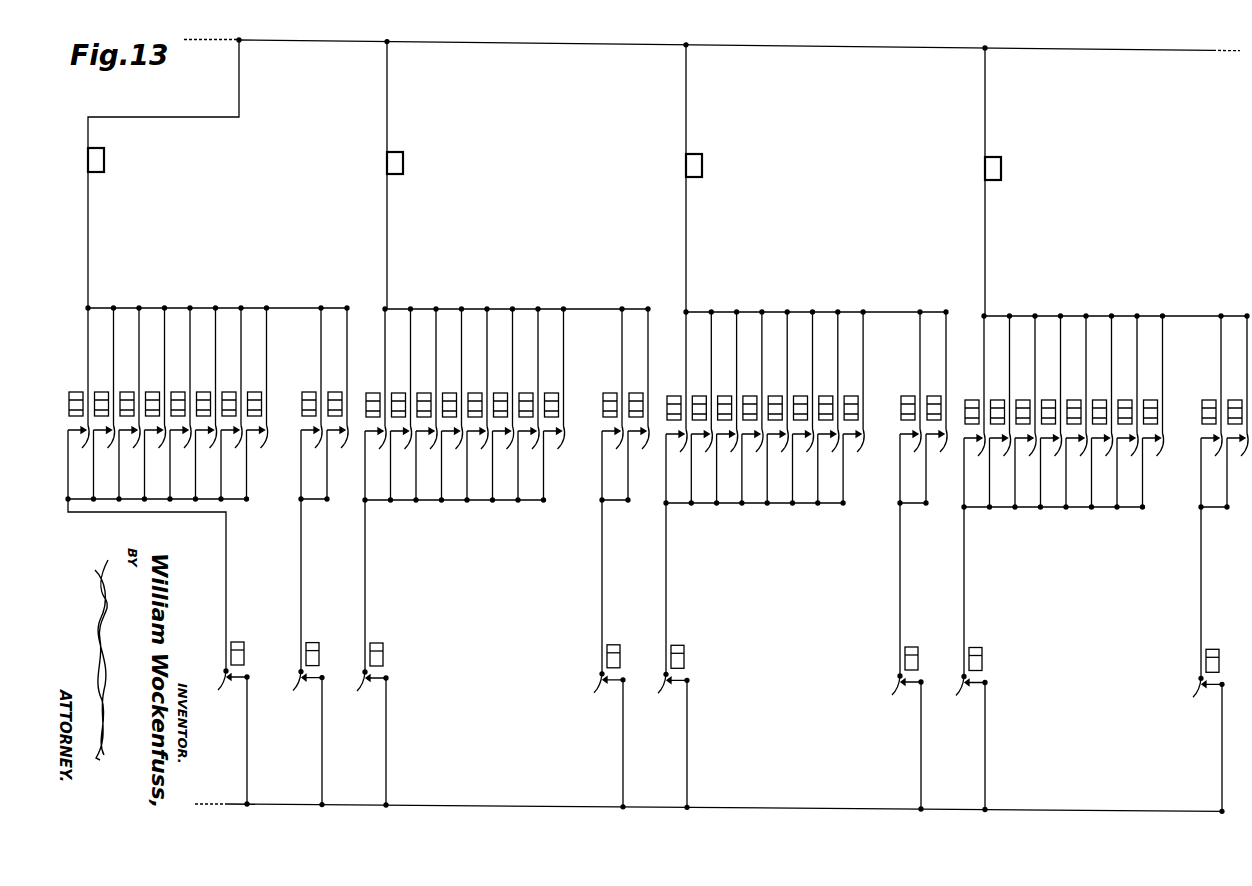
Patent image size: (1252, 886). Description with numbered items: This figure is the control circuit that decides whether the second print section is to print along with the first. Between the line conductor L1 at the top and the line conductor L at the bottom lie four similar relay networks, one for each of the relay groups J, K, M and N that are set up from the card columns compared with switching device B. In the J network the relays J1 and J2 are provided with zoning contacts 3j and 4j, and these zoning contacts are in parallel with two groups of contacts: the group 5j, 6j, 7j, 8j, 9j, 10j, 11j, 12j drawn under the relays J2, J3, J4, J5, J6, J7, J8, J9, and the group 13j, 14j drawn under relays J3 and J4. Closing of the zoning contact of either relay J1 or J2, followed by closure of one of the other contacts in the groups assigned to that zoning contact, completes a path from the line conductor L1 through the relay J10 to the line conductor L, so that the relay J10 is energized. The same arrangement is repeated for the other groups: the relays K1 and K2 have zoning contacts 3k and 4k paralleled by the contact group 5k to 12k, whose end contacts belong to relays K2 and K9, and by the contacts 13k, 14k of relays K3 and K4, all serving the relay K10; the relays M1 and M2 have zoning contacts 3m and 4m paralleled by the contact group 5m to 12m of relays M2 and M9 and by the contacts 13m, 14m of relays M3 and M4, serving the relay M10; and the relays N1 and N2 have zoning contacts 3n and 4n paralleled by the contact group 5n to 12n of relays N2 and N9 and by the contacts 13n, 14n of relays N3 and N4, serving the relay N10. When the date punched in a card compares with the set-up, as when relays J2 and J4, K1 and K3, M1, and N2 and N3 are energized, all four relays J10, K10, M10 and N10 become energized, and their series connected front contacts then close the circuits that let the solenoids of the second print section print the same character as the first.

The line conductor L1 is at (297, 40).
The supply line L is at (497, 783).
The relay J10 is at (104, 160).
The relay K10 is at (403, 163).
The relay M10 is at (702, 165).
The relay N10 is at (1001, 168).
The relay J1 is at (237, 642).
The relay J2 is at (78, 392).
The relay J3 is at (104, 392).
The relay J4 is at (129, 392).
The relay J5 is at (154, 392).
The relay J6 is at (180, 392).
The relay J7 is at (206, 392).
The relay J8 is at (231, 392).
The relay J9 is at (256, 392).
The relay K1 is at (376, 643).
The relay K2 is at (375, 393).
The relay K3 is at (612, 393).
The relay K4 is at (638, 393).
The relay K9 is at (554, 393).
The relay M1 is at (677, 645).
The relay M2 is at (676, 396).
The relay M3 is at (910, 396).
The relay M4 is at (936, 396).
The relay M9 is at (853, 396).
The relay N1 is at (975, 648).
The relay N2 is at (974, 400).
The relay N3 is at (1211, 400).
The relay N4 is at (1237, 400).
The relay N9 is at (1152, 400).
The zoning contact 3j is at (228, 737).
The zoning contact 4j is at (302, 738).
The contact 5j is at (78, 403).
The contact 6j is at (104, 403).
The contact 7j is at (129, 403).
The contact 8j is at (155, 403).
The contact 9j is at (180, 403).
The contact 10j is at (206, 403).
The contact 11j is at (231, 403).
The contact 12j is at (257, 403).
The contact 13j is at (311, 403).
The contact 14j is at (337, 403).
The relay contact 3k is at (367, 738).
The relay contact 4k is at (603, 740).
The relay contact 5k is at (375, 404).
The relay contact 12k is at (557, 404).
The relay contact 13k is at (615, 404).
The relay contact 14k is at (641, 404).
The relay contact 3m is at (668, 740).
The relay contact 4m is at (901, 742).
The relay contact 5m is at (676, 407).
The relay contact 12m is at (858, 407).
The relay contact 13m is at (915, 407).
The relay contact 14m is at (941, 407).
The relay contact 3n is at (966, 743).
The relay contact 4n is at (1202, 744).
The relay contact 5n is at (974, 411).
The relay contact 12n is at (1156, 411).
The relay contact 13n is at (1214, 411).
The relay contact 14n is at (1238, 411).